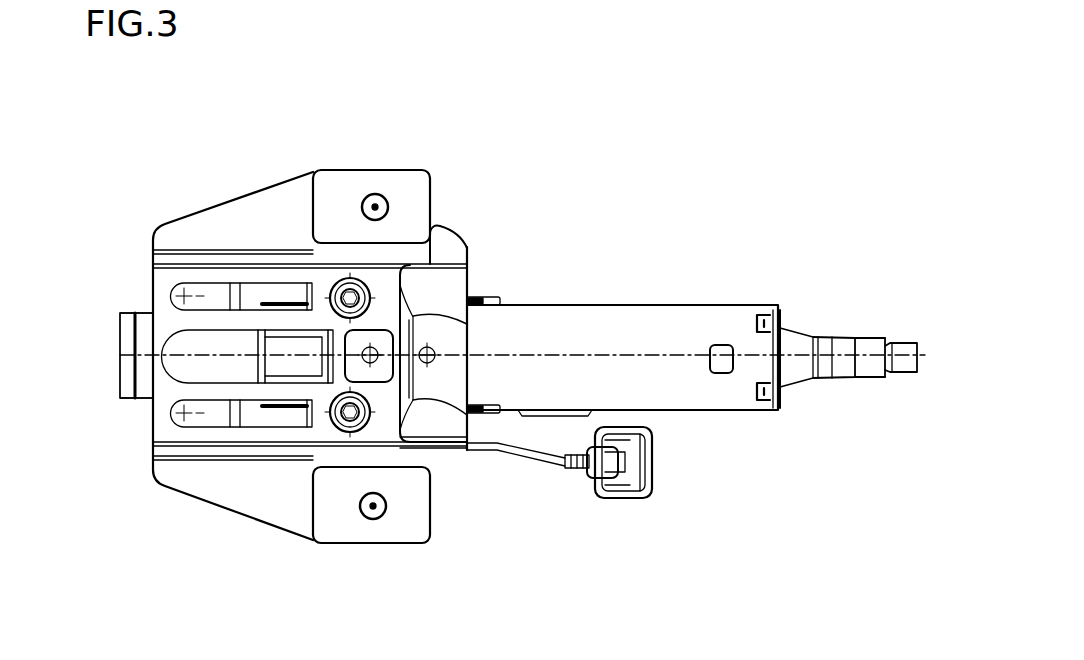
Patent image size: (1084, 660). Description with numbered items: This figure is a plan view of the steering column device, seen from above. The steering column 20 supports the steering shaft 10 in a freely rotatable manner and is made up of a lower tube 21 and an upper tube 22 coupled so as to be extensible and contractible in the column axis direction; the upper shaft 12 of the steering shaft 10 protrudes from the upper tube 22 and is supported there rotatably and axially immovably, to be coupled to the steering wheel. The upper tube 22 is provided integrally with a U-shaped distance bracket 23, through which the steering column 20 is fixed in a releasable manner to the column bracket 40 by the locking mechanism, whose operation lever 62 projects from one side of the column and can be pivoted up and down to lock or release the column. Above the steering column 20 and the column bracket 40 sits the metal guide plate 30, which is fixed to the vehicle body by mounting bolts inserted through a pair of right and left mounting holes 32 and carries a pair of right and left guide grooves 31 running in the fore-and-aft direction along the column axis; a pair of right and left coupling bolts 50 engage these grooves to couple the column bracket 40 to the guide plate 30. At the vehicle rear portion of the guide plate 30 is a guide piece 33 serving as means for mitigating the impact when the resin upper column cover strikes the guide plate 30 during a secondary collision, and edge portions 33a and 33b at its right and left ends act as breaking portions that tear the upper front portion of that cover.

The steering shaft 10 is at (797, 330).
The upper shaft 12 is at (870, 345).
The steering column 20 is at (598, 302).
The lower tube 21 is at (145, 393).
The upper tube 22 is at (692, 307).
The distance bracket 23 is at (485, 297).
The guide plate 30 is at (345, 175).
The guide groove 31 is at (210, 287).
The mounting hole 32 is at (388, 203).
The guide piece 33 is at (407, 378).
The edge portion 33a is at (467, 324).
The edge portion 33b is at (467, 415).
The column bracket 40 is at (455, 247).
The coupling bolt 50 is at (335, 288).
The operation lever 62 is at (530, 458).